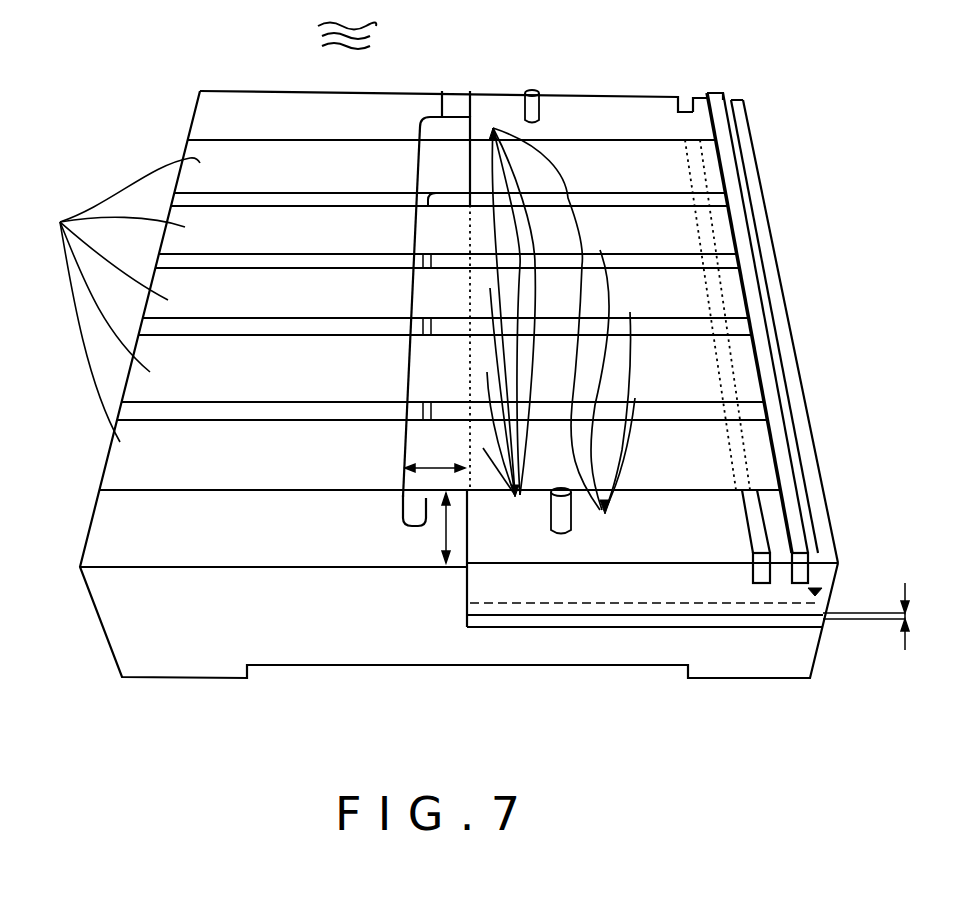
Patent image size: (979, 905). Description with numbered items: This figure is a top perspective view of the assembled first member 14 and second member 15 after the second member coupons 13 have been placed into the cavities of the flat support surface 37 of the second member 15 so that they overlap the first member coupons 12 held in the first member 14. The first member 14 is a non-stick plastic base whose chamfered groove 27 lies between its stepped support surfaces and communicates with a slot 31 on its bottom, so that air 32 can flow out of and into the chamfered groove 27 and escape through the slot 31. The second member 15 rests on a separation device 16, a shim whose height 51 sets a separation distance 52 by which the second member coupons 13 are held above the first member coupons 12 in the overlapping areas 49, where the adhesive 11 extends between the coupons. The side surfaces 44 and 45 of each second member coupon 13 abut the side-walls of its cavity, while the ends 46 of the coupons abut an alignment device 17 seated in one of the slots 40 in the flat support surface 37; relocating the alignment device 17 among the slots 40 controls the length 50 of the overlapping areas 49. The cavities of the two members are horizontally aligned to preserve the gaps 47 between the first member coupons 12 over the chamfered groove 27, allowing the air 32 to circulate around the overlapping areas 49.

The adhesive 11 is at (439, 296).
The first member coupon 12 is at (115, 300).
The second member coupon 13 is at (477, 167).
The first member 14 is at (140, 525).
The second member 15 is at (577, 547).
The separation device 16 is at (725, 606).
The alignment device 17 is at (797, 362).
The chamfered groove 27 is at (411, 525).
The slot 31 is at (452, 667).
The air 32 is at (352, 26).
The flat support surface 37 is at (663, 518).
The slot 40 is at (752, 571).
The side surface 44 is at (559, 336).
The side surface 45 is at (525, 312).
The ends 46 is at (722, 160).
The gaps 47 is at (405, 205).
The overlapping areas 49 is at (430, 221).
The length 50 is at (447, 473).
The height 51 is at (905, 614).
The separation distance 52 is at (443, 517).